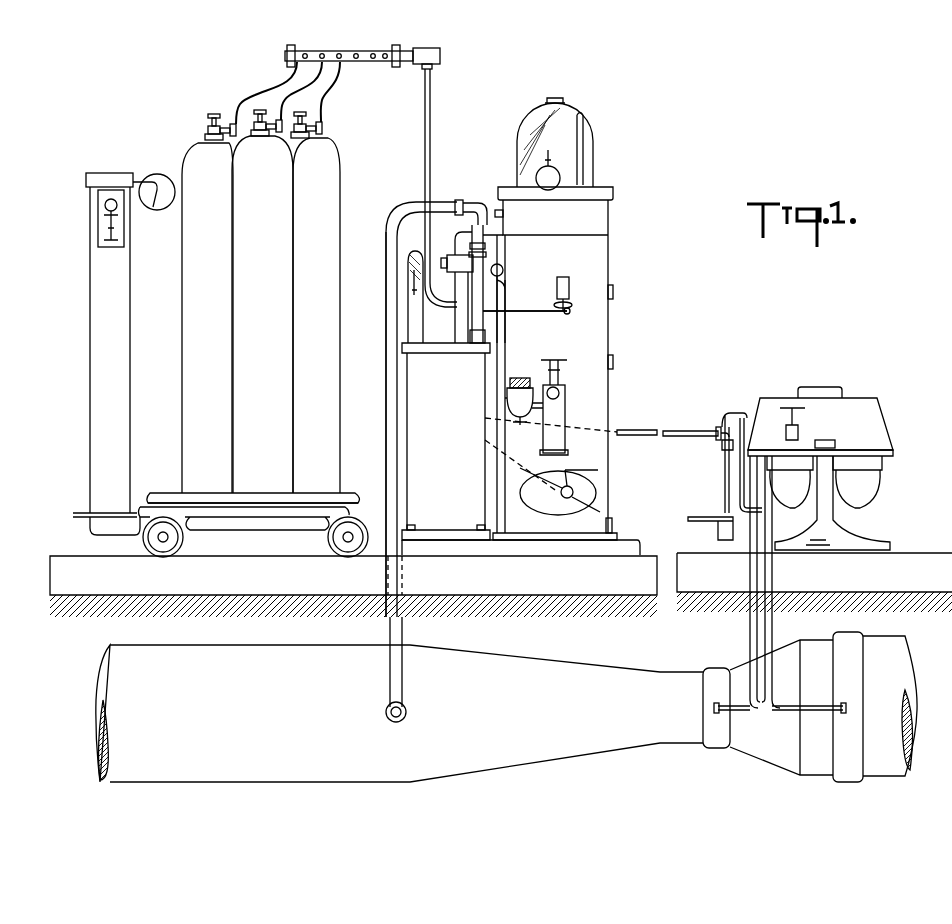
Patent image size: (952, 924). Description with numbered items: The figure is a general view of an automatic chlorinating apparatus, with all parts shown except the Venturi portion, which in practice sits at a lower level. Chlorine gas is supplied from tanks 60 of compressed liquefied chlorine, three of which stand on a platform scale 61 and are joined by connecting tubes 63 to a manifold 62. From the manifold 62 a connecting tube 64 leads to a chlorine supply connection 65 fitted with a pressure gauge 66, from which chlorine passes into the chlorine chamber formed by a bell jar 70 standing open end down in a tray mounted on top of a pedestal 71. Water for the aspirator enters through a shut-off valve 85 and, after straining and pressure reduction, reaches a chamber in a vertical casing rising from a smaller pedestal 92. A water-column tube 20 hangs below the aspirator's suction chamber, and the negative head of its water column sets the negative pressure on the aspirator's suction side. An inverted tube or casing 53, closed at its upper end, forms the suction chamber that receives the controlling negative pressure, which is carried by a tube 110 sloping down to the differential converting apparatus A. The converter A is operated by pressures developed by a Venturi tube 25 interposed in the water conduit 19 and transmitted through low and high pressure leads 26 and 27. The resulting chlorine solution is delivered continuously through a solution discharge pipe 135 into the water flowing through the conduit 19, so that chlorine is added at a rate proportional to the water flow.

The water conduit 19 is at (262, 780).
The water-column tube 20 is at (457, 313).
The Venturi tube 25 is at (753, 750).
The low pressure lead 26 is at (750, 623).
The high pressure lead 27 is at (770, 632).
The inverted tube or casing 53 is at (406, 296).
The tank 60 is at (261, 301).
The platform scale 61 is at (168, 495).
The manifold 62 is at (328, 58).
The connecting tubes 63 is at (265, 88).
The connecting tube 64 is at (431, 153).
The chlorine supply connection 65 is at (568, 314).
The pressure gauge 66 is at (563, 287).
The bell jar 70 is at (525, 125).
The pedestal 71 is at (600, 252).
The shut-off valve 85 is at (562, 388).
The smaller pedestal 92 is at (403, 404).
The tube 110 is at (628, 428).
The solution discharge pipe 135 is at (387, 333).
The differential converting apparatus A is at (883, 442).